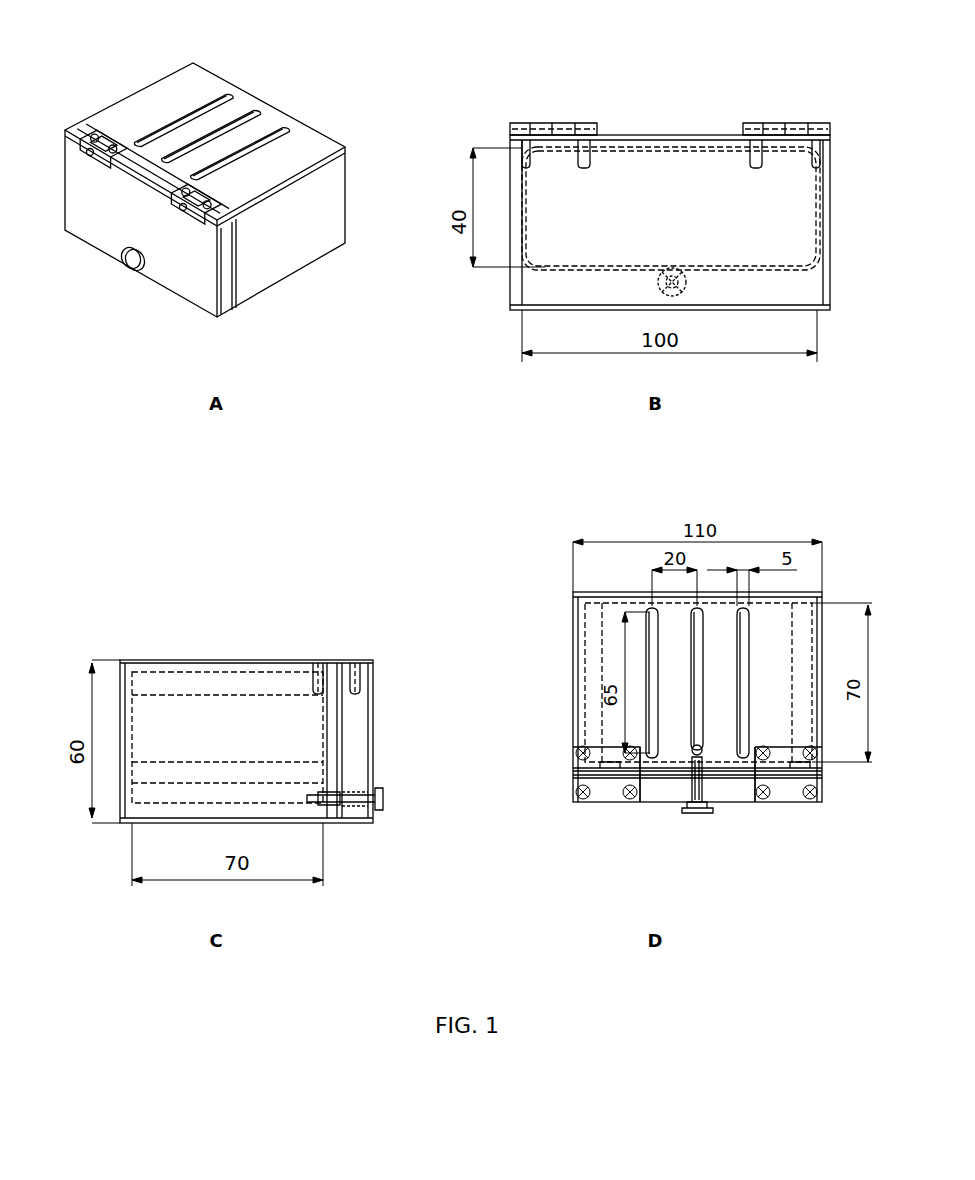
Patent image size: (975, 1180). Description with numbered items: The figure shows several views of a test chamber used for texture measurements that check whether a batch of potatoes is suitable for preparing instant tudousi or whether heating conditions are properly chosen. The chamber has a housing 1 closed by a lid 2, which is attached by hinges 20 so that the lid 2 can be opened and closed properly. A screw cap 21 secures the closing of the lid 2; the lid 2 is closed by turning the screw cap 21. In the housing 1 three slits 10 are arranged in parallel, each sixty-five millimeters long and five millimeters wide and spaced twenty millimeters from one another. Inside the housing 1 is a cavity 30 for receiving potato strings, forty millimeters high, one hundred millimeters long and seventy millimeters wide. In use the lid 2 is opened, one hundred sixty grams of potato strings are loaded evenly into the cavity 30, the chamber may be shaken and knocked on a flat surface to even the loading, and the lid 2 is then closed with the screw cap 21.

The housing 1 is at (300, 140).
The lid 2 is at (183, 263).
The slits 10 is at (220, 95).
The hinges 20 is at (245, 208).
The screw cap 21 is at (130, 268).
The cavity 30 is at (640, 178).